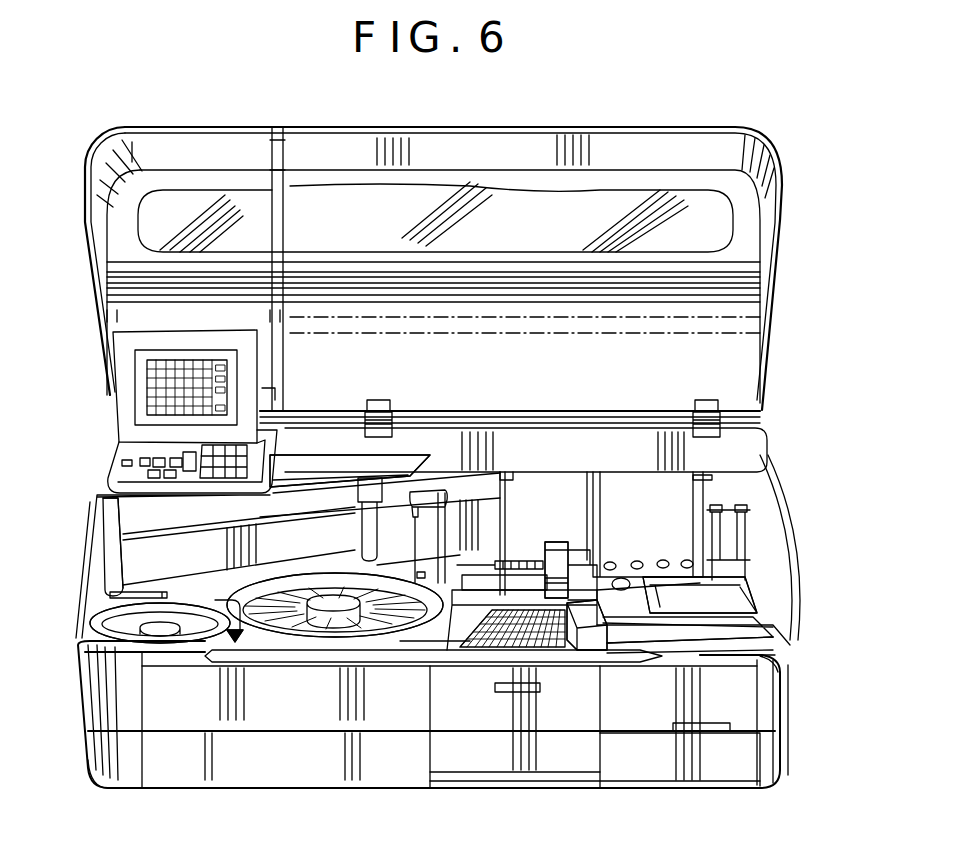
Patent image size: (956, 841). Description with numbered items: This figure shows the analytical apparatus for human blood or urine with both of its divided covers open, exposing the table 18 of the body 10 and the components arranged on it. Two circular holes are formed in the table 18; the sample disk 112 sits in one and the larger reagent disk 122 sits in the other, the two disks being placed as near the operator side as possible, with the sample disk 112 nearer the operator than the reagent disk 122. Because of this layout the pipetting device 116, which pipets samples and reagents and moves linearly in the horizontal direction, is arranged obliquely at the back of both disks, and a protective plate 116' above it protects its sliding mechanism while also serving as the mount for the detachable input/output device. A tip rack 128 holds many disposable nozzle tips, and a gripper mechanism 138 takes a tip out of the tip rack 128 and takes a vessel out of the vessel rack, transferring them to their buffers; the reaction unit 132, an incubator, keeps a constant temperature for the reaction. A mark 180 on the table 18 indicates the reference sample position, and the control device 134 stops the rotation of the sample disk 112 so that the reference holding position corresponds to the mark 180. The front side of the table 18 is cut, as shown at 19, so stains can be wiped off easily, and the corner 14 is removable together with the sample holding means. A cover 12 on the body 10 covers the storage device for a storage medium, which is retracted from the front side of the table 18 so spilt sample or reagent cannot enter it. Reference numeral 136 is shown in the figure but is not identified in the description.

The body 10 is at (786, 674).
The cover 12 is at (588, 750).
The corner 14 is at (118, 768).
The table 18 is at (418, 640).
The cut front side of the table 19 is at (378, 655).
The sample disk 112 is at (113, 628).
The pipetting device 116 is at (86, 543).
The protective plate 116' is at (350, 510).
The reagent disk 122 is at (298, 625).
The tip rack 128 is at (538, 636).
The reaction unit 132 is at (528, 550).
The control device 134 is at (757, 636).
The waste tray 136 is at (758, 612).
The gripper mechanism 138 is at (453, 643).
The mark 180 is at (225, 637).